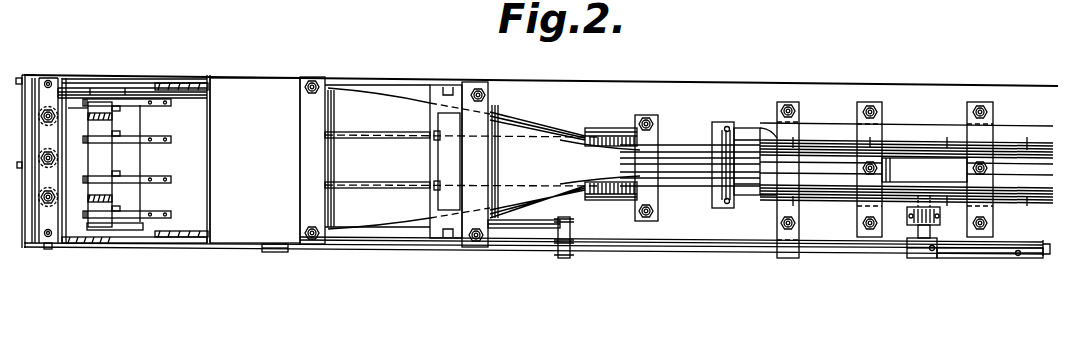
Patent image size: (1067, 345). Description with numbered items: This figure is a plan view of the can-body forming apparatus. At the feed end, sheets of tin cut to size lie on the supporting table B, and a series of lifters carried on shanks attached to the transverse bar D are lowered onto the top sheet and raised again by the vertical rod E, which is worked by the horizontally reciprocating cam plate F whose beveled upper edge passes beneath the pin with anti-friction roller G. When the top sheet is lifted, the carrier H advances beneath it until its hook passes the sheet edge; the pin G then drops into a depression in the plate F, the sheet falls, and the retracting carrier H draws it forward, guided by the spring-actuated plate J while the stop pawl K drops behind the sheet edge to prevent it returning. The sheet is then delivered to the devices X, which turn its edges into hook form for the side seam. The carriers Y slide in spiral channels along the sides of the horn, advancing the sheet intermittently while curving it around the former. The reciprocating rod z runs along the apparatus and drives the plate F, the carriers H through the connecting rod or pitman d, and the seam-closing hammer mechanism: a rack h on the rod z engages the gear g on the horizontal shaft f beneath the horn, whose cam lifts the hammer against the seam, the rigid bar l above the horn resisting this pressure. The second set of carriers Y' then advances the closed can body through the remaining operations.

The transverse bar D is at (48, 98).
The supporting table B is at (68, 108).
The stop pawl K is at (117, 90).
The spring-actuated plate J is at (186, 92).
The carrier H is at (122, 157).
The vertical rod E is at (33, 244).
The pin with anti-friction roller G is at (48, 237).
The cam plate F is at (112, 240).
The edge-turning devices X is at (255, 165).
The carriers Y is at (484, 158).
The connecting rod or pitman d is at (536, 226).
The reciprocating rod z is at (612, 249).
The shaft A is at (674, 162).
The carriers Y' is at (906, 167).
The rigid bar l is at (924, 170).
The horizontal shaft f is at (912, 229).
The gear g is at (936, 248).
The rack h is at (975, 257).